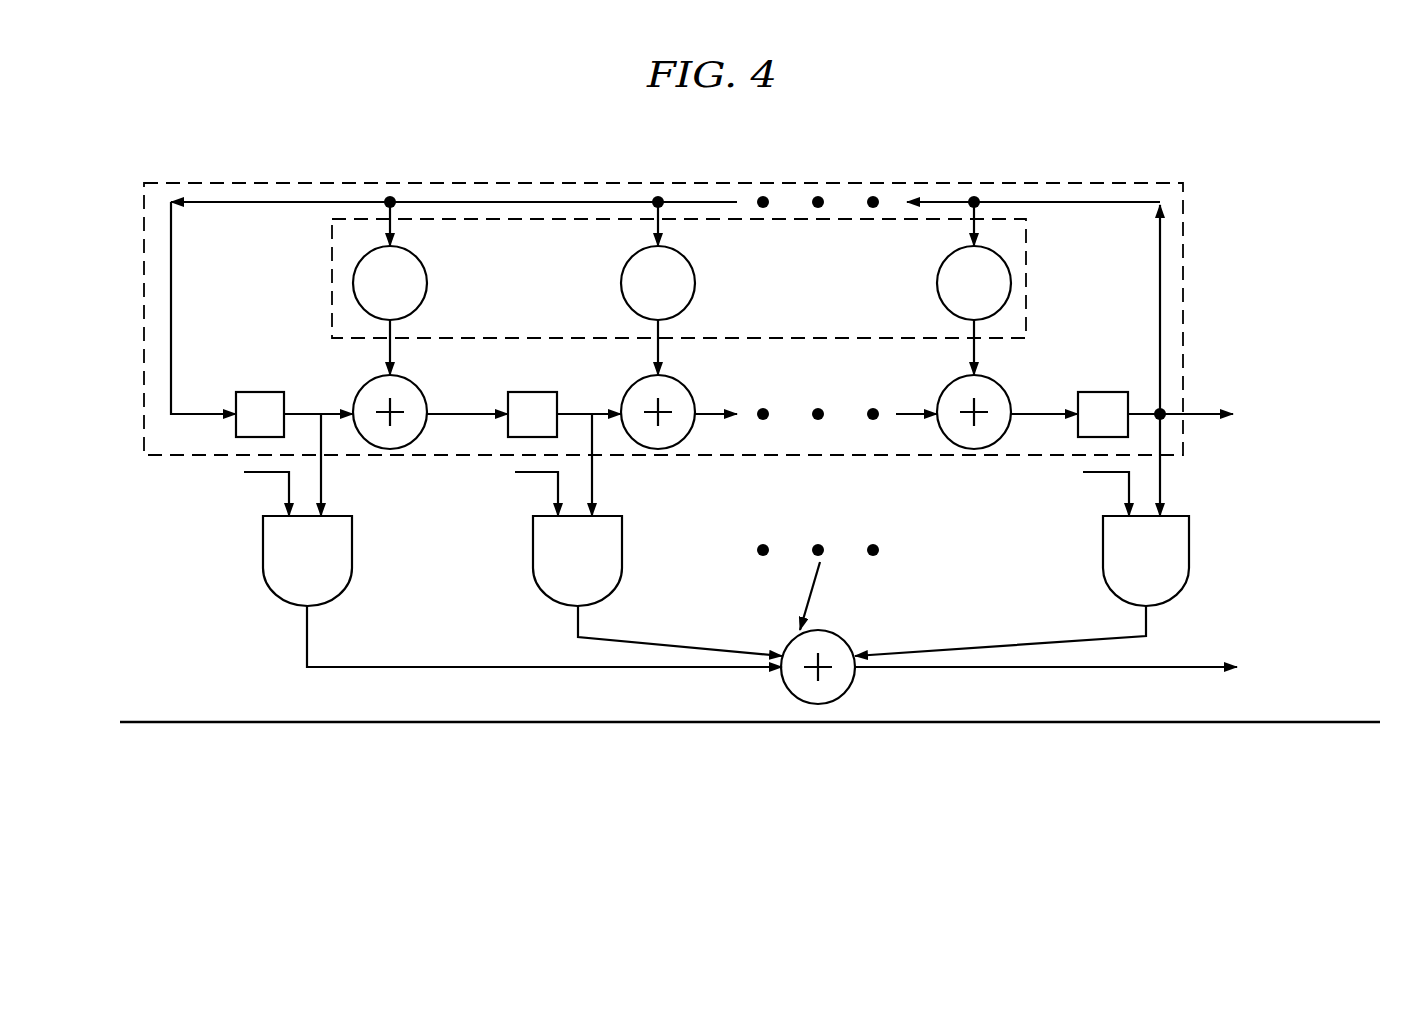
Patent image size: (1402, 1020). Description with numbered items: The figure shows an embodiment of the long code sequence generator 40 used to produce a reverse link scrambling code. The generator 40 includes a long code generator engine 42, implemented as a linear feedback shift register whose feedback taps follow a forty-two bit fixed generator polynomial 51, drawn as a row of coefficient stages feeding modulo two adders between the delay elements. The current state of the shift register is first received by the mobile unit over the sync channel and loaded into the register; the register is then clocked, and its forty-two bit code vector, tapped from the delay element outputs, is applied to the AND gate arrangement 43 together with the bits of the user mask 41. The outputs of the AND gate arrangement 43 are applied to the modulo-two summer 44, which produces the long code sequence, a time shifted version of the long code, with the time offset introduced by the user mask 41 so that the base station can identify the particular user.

The long code sequence generator 40 is at (1312, 237).
The user mask 41 is at (198, 472).
The long code generator engine 42 is at (144, 243).
The AND gate arrangement 43 is at (240, 558).
The modulo 2 summer 44 is at (793, 693).
The fixed generator polynomial 51 is at (332, 272).